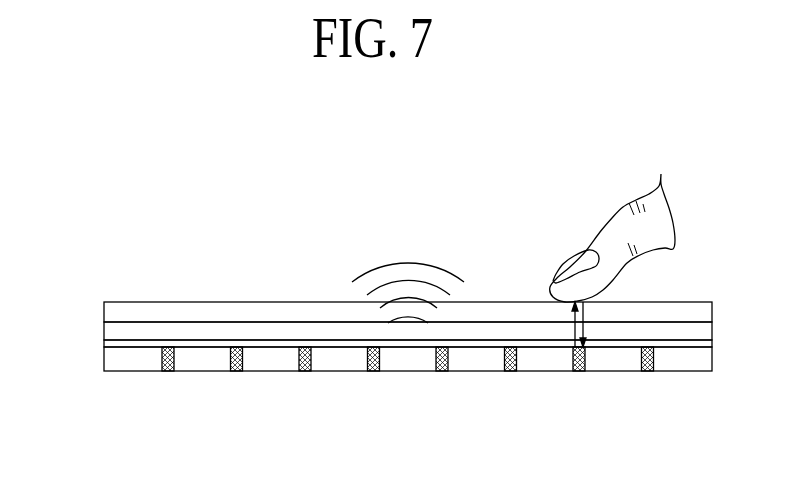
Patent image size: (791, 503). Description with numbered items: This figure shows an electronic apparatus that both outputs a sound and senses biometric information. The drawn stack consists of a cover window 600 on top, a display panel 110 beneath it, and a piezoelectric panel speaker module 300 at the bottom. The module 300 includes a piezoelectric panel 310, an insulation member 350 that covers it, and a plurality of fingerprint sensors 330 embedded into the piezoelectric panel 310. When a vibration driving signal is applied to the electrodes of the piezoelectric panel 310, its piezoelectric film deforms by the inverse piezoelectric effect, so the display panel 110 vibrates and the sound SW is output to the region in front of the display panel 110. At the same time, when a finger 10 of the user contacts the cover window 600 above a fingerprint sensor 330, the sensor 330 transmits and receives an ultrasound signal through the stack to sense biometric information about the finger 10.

The finger 10 is at (664, 218).
The sound SW is at (372, 270).
The cover window 600 is at (103, 308).
The display panel 110 is at (103, 328).
The piezoelectric panel speaker module 300 is at (408, 414).
The piezoelectric panel 310 is at (128, 372).
The insulation member 350 is at (197, 343).
The fingerprint sensor 330 is at (408, 396).